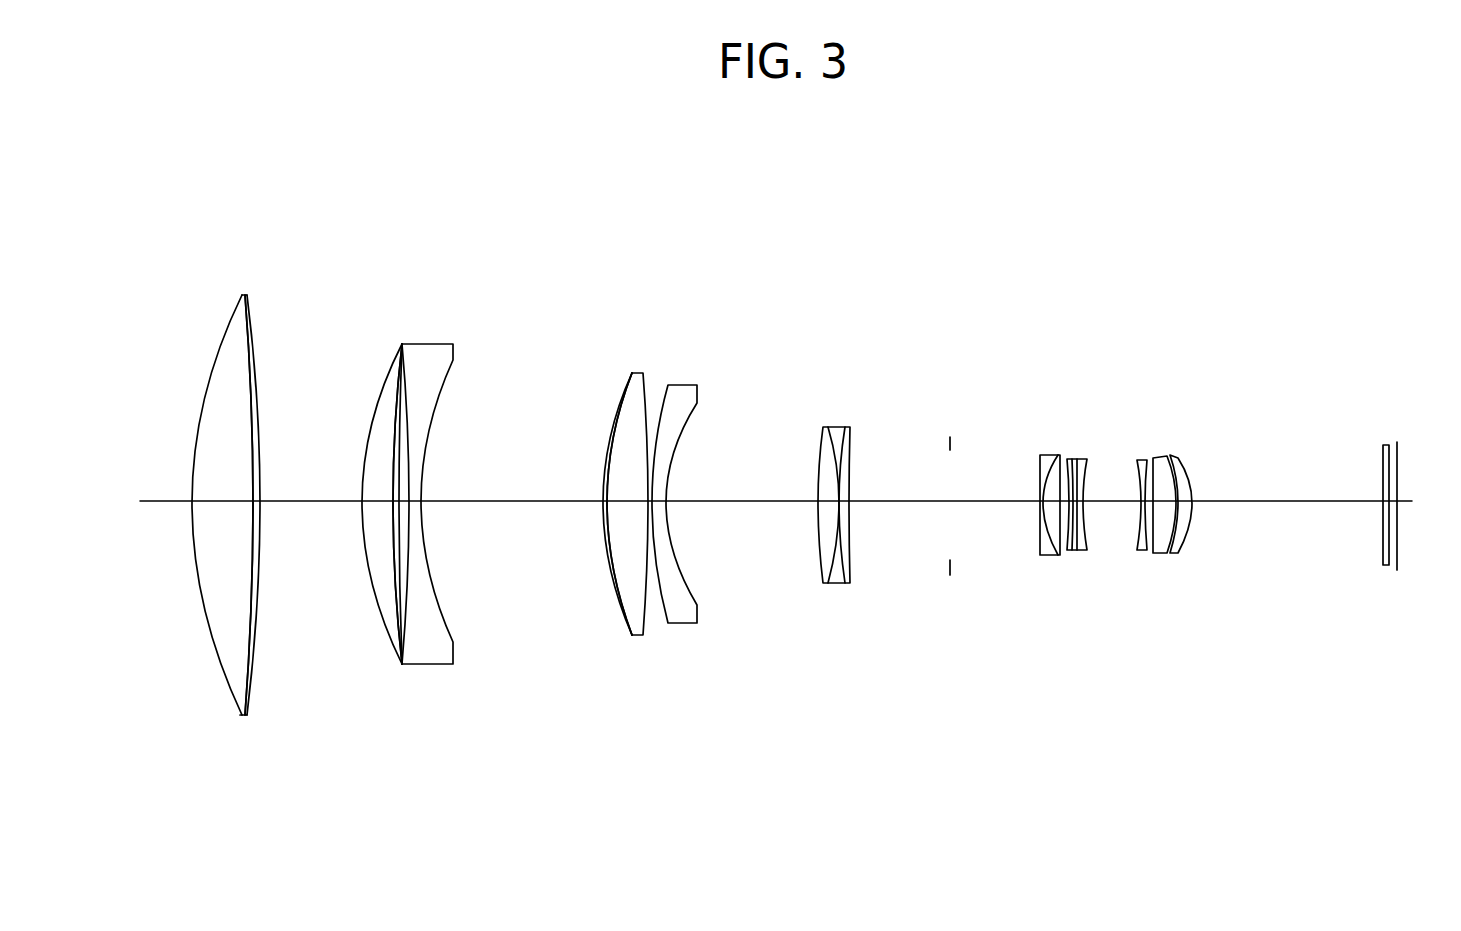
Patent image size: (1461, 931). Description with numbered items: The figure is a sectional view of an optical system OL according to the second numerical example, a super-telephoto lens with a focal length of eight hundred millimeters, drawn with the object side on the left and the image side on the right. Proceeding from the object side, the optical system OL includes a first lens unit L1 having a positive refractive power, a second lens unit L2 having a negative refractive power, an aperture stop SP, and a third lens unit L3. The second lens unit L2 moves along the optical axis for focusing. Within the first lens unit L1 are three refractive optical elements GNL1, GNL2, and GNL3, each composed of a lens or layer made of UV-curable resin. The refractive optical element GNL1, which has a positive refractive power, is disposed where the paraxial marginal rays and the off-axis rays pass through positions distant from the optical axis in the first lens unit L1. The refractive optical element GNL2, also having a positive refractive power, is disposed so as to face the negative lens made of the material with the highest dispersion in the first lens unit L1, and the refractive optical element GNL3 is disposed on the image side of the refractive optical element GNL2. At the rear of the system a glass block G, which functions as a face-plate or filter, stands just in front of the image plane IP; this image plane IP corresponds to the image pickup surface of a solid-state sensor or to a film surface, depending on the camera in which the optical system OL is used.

The optical system OL is at (1198, 240).
The first lens unit L1 is at (713, 720).
The second lens unit L2 is at (875, 597).
The third lens unit L3 is at (1198, 595).
The refractive optical element GNL1 is at (257, 413).
The refractive optical element GNL2 is at (398, 423).
The refractive optical element GNL3 is at (607, 460).
The aperture stop SP is at (950, 438).
The glass block G is at (1385, 445).
The image plane IP is at (1398, 449).